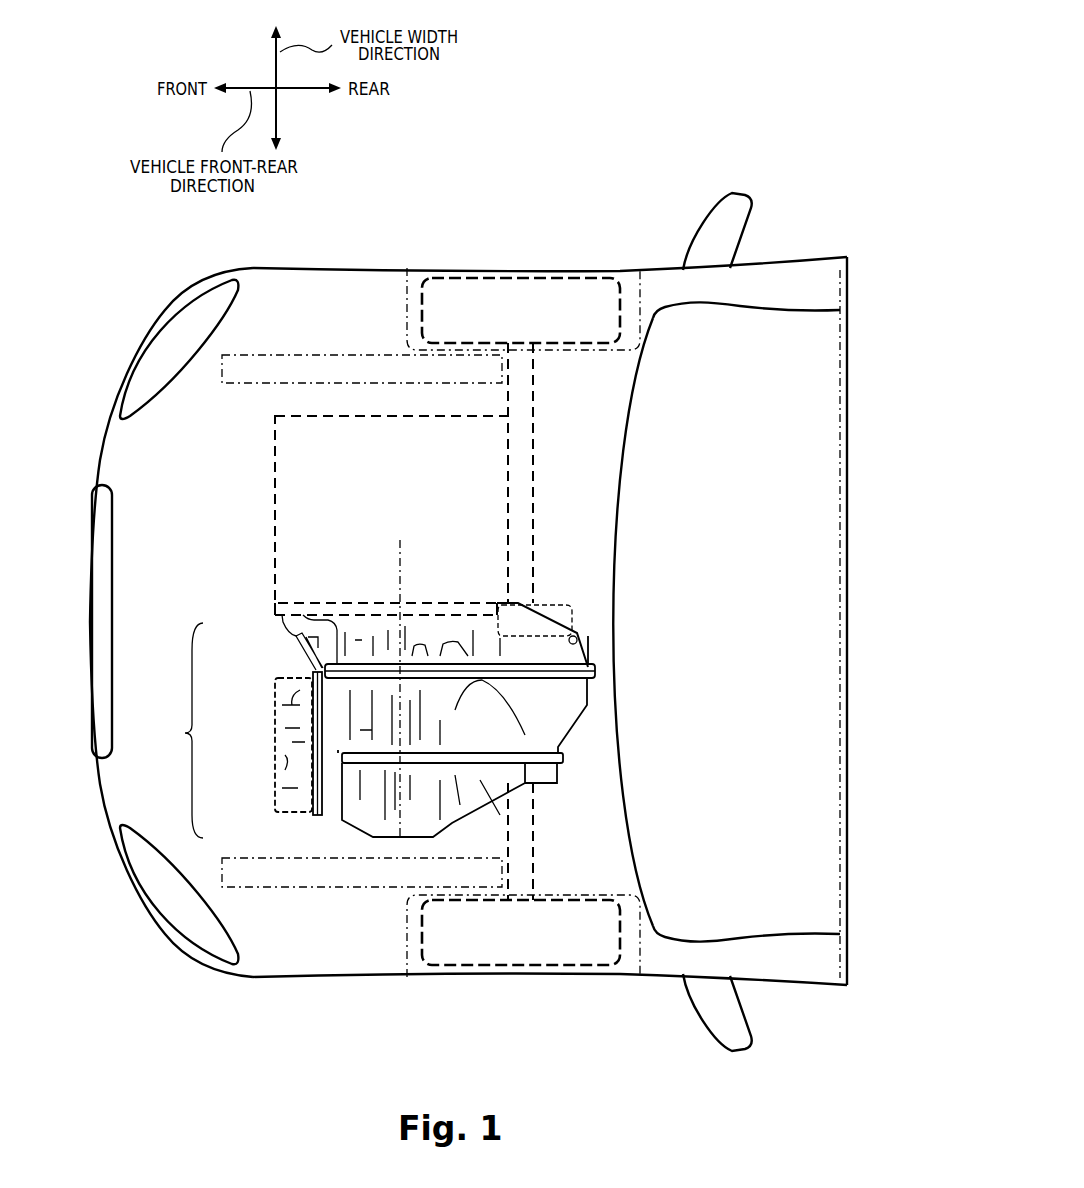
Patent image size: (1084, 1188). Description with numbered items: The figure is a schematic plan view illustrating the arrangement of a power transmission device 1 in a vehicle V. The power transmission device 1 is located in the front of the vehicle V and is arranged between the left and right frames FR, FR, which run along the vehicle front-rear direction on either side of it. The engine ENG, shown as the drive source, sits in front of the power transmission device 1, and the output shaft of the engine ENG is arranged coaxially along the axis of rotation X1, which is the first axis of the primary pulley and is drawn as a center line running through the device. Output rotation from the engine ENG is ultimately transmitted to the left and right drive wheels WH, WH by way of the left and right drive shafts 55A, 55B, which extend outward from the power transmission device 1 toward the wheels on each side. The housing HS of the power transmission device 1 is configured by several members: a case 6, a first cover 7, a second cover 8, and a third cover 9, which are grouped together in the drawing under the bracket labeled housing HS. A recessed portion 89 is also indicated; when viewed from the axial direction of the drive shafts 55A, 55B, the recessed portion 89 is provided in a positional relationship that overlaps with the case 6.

The vehicle V is at (134, 330).
The power transmission device 1 is at (232, 598).
The engine ENG is at (275, 457).
The frame FR is at (360, 354).
The drive wheel WH is at (537, 298).
The drive shaft 55A is at (534, 840).
The drive shaft 55B is at (534, 463).
The axis of rotation X1 is at (401, 672).
The recessed portion 89 is at (590, 636).
The housing HS is at (185, 733).
The second cover 8 is at (327, 645).
The case 6 is at (337, 697).
The third cover 9 is at (285, 757).
The first cover 7 is at (360, 825).